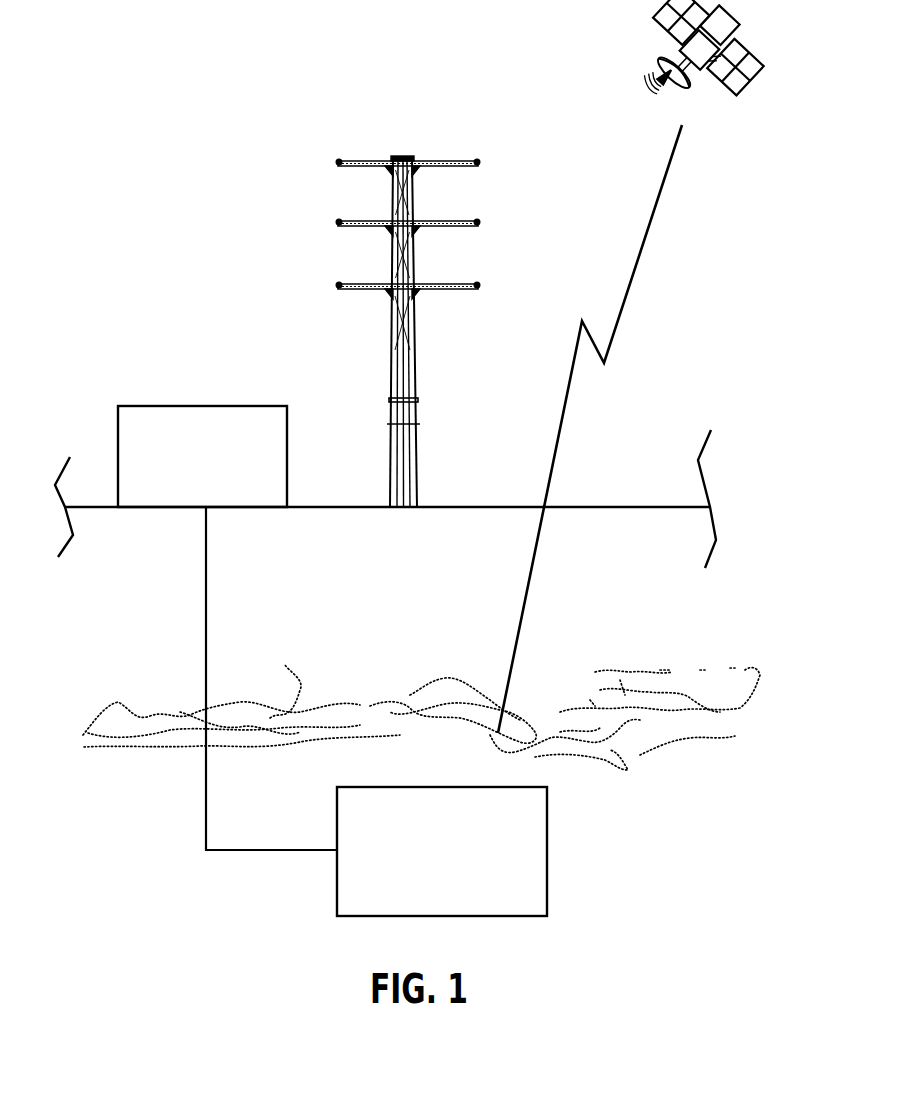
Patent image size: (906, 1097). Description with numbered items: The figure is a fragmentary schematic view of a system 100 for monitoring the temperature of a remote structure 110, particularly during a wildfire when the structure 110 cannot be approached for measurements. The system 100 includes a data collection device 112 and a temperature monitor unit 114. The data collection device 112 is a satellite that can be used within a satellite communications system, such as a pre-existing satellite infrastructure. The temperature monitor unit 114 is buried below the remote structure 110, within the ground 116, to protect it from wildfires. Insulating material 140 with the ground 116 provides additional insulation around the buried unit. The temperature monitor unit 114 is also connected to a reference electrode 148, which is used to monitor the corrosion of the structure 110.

The system 100 is at (446, 52).
The remote structure 110 is at (393, 342).
The data collection device 112 is at (668, 21).
The temperature monitor unit 114 is at (505, 897).
The ground 116 is at (631, 507).
The insulating material 140 is at (414, 690).
The reference electrode 148 is at (185, 500).